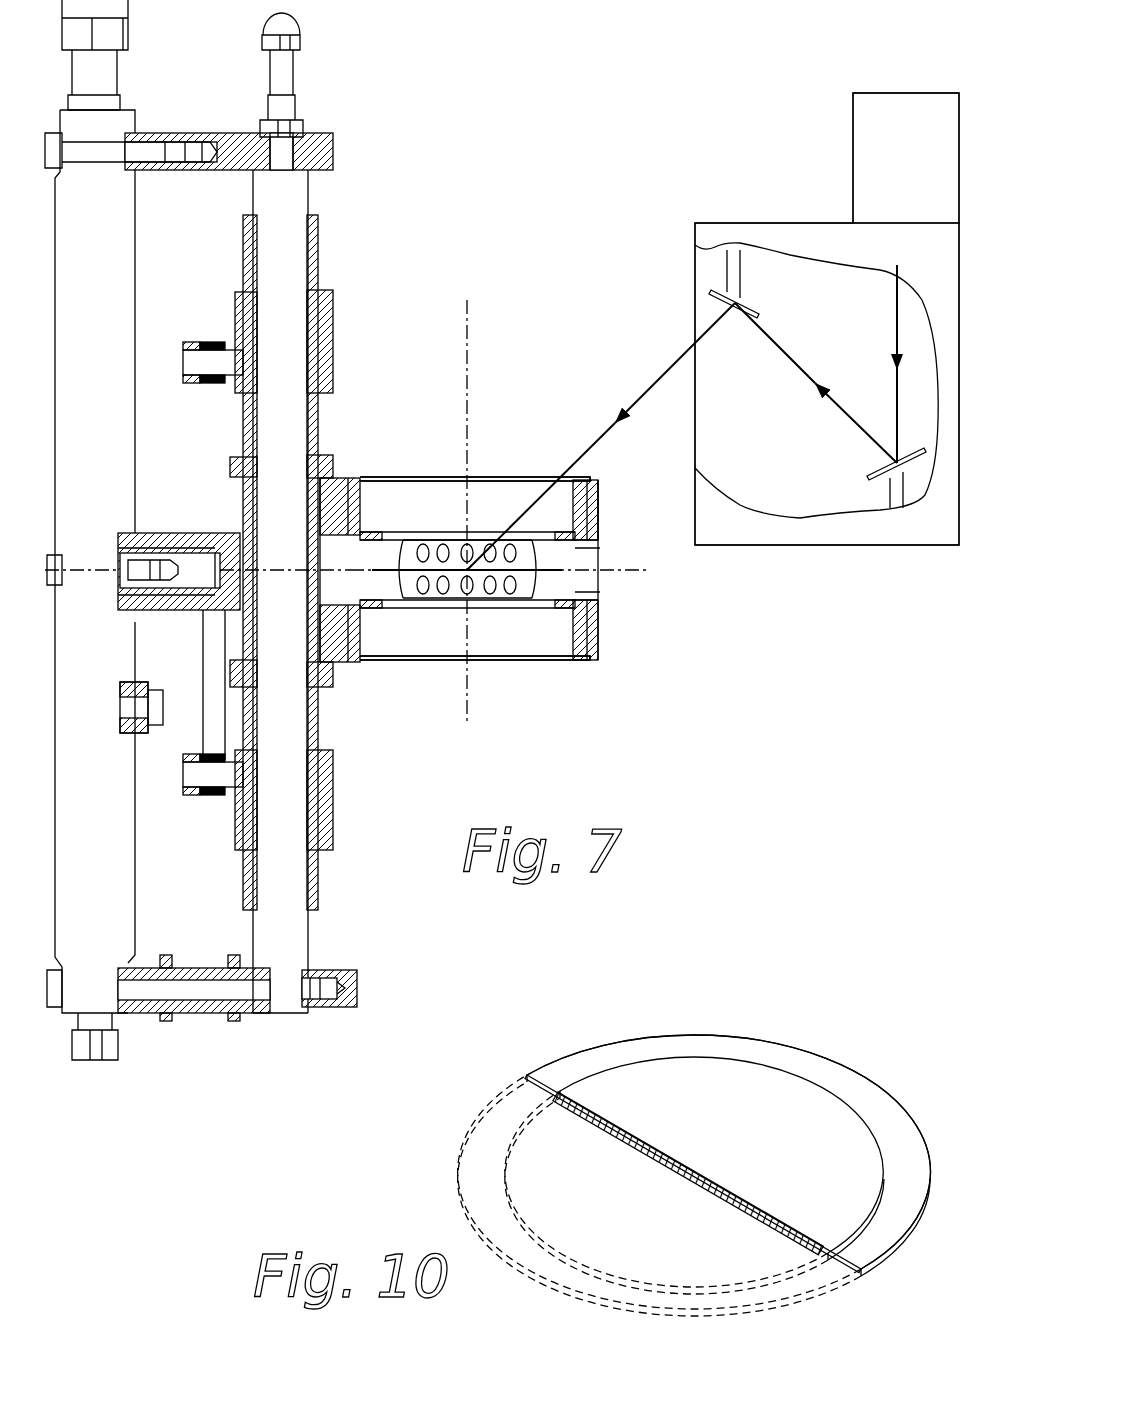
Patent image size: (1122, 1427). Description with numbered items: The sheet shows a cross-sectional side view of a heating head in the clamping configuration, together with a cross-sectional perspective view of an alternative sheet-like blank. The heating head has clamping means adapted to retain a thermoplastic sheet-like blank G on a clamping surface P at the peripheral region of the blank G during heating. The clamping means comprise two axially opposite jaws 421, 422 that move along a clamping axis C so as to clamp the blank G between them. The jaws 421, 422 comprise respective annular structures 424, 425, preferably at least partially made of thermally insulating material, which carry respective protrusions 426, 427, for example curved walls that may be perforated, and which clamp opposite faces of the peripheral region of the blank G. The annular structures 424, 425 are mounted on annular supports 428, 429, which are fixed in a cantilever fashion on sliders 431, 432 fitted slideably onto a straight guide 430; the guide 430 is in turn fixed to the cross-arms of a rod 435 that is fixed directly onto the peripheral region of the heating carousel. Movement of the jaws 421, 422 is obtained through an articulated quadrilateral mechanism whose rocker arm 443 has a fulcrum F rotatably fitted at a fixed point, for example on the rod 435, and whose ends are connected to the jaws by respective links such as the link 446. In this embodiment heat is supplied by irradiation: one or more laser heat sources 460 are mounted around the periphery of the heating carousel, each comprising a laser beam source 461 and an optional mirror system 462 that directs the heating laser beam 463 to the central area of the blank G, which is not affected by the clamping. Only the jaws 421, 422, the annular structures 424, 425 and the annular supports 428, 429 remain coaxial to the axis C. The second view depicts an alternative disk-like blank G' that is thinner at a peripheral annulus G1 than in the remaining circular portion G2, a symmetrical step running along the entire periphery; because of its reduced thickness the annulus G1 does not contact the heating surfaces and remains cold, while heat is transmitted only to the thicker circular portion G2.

In FIG. 7, the jaw 421 is at (613, 655).
In FIG. 7, the jaw 422 is at (603, 508).
In FIG. 7, the annular structure 424 is at (377, 660).
In FIG. 7, the annular structure 425 is at (372, 482).
In FIG. 7, the protrusion 426 is at (598, 590).
In FIG. 7, the protrusion 427 is at (540, 560).
In FIG. 7, the annular support 428 is at (597, 665).
In FIG. 7, the annular support 429 is at (600, 472).
In FIG. 7, the straight guide 430 is at (273, 197).
In FIG. 7, the slider 431 is at (330, 813).
In FIG. 7, the slider 432 is at (243, 312).
In FIG. 7, the rod 435 is at (97, 229).
In FIG. 7, the rocker arm 443 is at (175, 533).
In FIG. 7, the link 446 is at (203, 735).
In FIG. 7, the laser heat source 460 is at (803, 133).
In FIG. 7, the laser beam source 461 is at (912, 120).
In FIG. 7, the mirror system 462 is at (752, 237).
In FIG. 7, the heating laser beam 463 is at (650, 387).
In FIG. 7, the clamping axis C is at (490, 300).
In FIG. 7, the fulcrum F is at (95, 560).
In FIG. 7, the clamping surface P is at (690, 597).
In FIG. 7, the sheet-like blank G is at (467, 621).
In FIG. 10, the disk-like blank G' is at (727, 1097).
In FIG. 10, the peripheral annulus G1 is at (873, 1232).
In FIG. 10, the circular portion G2 is at (695, 1075).